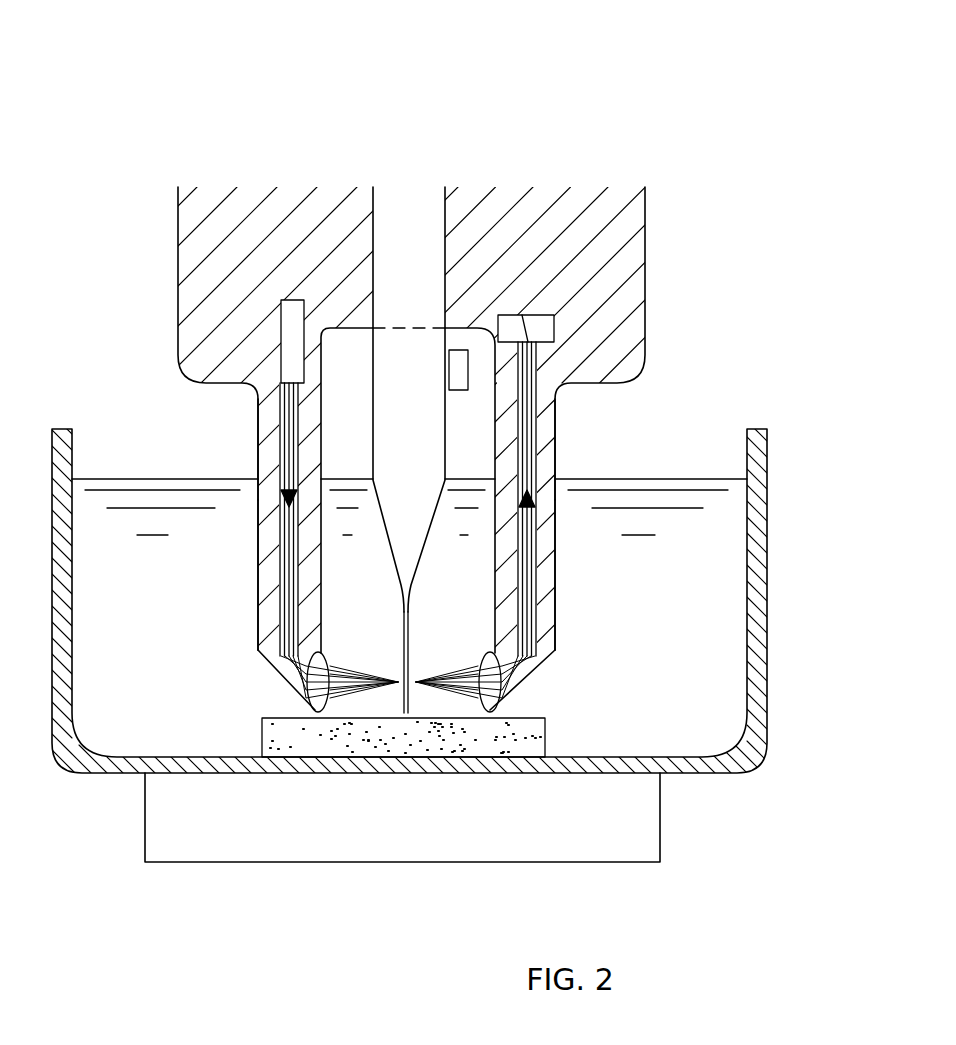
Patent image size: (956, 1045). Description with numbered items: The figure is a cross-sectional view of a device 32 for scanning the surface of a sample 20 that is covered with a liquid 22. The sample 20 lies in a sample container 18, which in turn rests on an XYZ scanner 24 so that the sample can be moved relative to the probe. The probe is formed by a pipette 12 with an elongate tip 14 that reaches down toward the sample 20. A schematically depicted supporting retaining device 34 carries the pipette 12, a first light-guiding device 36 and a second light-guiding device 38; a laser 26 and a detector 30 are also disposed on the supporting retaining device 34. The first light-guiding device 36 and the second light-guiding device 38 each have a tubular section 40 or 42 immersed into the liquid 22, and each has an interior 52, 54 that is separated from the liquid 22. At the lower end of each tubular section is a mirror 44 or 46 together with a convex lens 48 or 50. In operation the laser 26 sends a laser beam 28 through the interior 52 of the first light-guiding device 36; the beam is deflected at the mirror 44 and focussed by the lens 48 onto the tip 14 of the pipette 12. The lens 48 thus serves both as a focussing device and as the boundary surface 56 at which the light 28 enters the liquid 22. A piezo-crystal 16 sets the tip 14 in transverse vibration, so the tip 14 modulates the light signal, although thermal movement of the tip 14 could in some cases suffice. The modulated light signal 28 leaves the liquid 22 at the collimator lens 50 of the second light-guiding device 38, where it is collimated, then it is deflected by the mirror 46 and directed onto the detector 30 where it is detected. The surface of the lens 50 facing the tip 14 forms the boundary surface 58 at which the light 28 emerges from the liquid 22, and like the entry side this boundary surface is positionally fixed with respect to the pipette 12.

The pipette 12 is at (446, 233).
The elongate tip 14 is at (406, 612).
The piezo-crystal 16 is at (458, 386).
The sample container 18 is at (762, 470).
The sample 20 is at (548, 735).
The liquid 22 is at (725, 636).
The XYZ scanner 24 is at (216, 850).
The laser 26 is at (290, 325).
The laser beam 28 is at (279, 407).
The detector 30 is at (537, 318).
The device 32 is at (376, 128).
The supporting retaining device 34 is at (645, 224).
The first light-guiding device 36 is at (258, 437).
The second light-guiding device 38 is at (556, 422).
The tubular section 40 is at (258, 583).
The tubular section 42 is at (553, 588).
The mirror 44 is at (296, 686).
The mirror 46 is at (518, 686).
The convex lens 48 is at (263, 656).
The collimator lens 50 is at (550, 656).
The interior 52 is at (265, 525).
The interior 54 is at (553, 548).
The boundary surface 56 is at (328, 666).
The boundary surface 58 is at (478, 666).